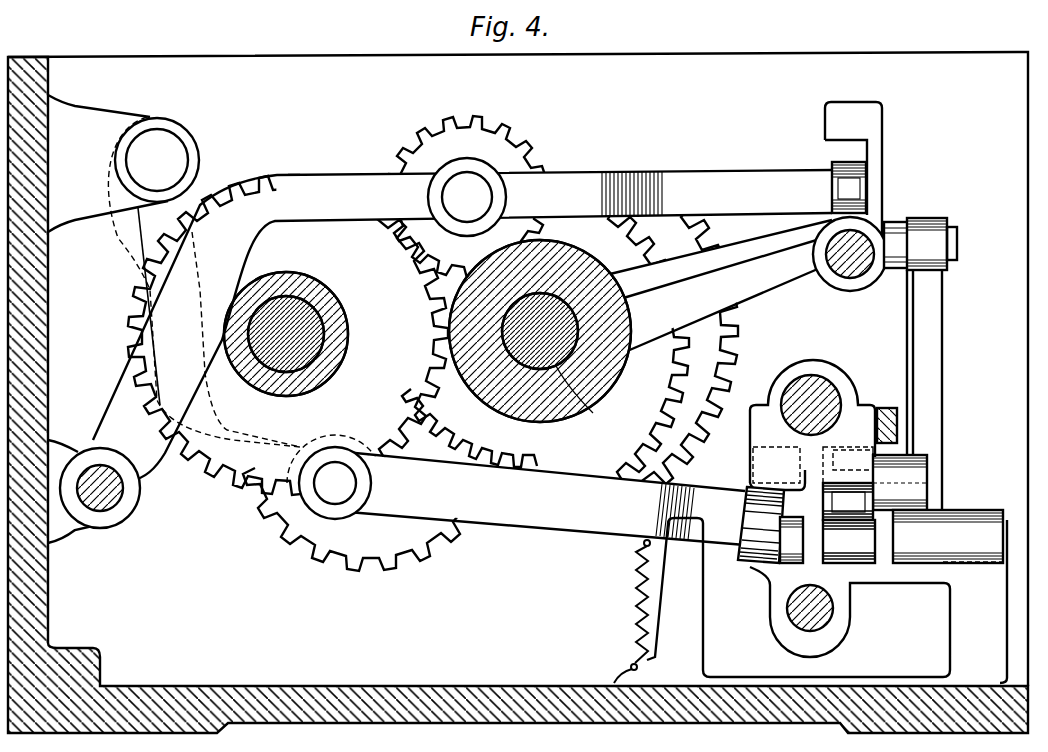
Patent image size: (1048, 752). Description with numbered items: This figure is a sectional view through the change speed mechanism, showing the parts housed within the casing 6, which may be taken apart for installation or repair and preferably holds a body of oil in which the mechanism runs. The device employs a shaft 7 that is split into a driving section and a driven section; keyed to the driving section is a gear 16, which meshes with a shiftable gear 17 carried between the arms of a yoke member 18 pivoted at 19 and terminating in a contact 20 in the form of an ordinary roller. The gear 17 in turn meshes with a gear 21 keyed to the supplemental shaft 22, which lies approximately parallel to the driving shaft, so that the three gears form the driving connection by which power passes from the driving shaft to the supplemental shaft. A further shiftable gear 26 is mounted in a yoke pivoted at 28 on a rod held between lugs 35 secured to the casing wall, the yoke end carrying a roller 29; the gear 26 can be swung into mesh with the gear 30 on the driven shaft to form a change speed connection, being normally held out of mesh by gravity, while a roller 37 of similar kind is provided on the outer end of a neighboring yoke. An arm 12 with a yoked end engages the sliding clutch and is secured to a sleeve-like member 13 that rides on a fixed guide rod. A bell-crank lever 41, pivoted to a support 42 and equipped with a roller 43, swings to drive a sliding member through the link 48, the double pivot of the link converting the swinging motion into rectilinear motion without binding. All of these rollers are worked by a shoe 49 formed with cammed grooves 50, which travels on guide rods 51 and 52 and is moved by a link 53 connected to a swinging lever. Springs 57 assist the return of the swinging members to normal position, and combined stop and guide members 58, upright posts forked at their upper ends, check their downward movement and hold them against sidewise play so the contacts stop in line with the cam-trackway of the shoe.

The casing 6 is at (1000, 447).
The shaft 7 is at (582, 405).
The arm 12 is at (770, 300).
The sleeve-like member 13 is at (872, 226).
The gear 16 is at (513, 423).
The shiftable gear 17 is at (487, 122).
The yoke member 18 is at (700, 165).
The pivot 19 is at (108, 497).
The contact 20 is at (848, 185).
The gear 21 is at (205, 475).
The supplemental shaft 22 is at (350, 332).
The gear 26 is at (300, 555).
The pivot 28 is at (173, 160).
The roller 29 is at (745, 565).
The gear 30 is at (570, 341).
The lugs 35 is at (108, 163).
The roller 37 is at (630, 165).
The bell-crank lever 41 is at (928, 377).
The support 42 is at (975, 601).
The roller 43 is at (897, 500).
The link 48 is at (953, 228).
The shoe 49 is at (757, 437).
The cammed grooves 50 is at (849, 523).
The guide rod 51 is at (835, 393).
The guide rod 52 is at (825, 620).
The link 53 is at (897, 432).
The springs 57 is at (640, 612).
The combined stop and guide members 58 is at (669, 592).